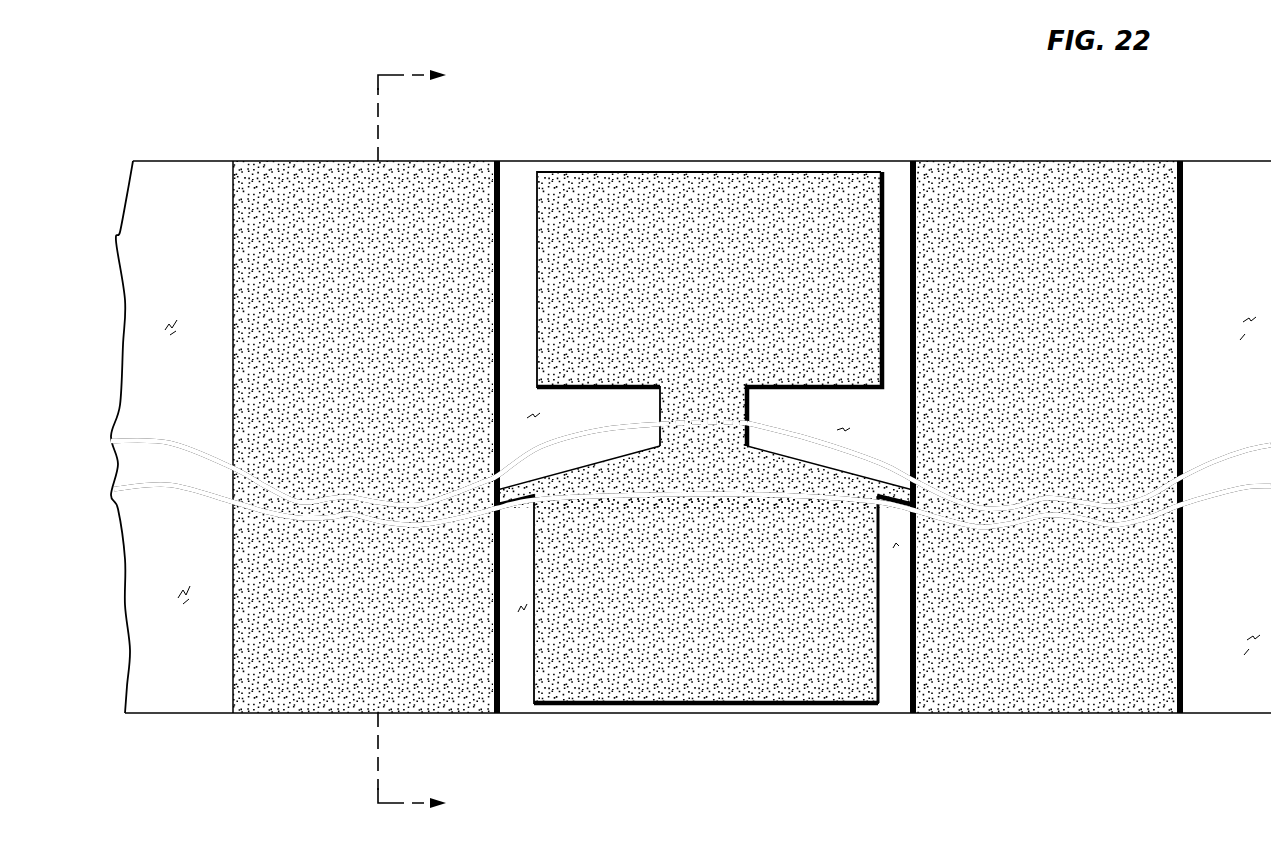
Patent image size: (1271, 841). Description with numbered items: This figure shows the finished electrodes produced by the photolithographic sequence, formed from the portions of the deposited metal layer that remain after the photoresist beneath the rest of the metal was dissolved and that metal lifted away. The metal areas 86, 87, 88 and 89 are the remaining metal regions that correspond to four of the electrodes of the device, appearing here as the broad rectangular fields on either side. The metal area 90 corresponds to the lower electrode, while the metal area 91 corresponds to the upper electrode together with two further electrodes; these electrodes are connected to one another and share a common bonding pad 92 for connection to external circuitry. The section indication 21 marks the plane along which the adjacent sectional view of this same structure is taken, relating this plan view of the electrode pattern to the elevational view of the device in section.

The section line of FIG. 21 is at (426, 440).
The metal area 86 is at (307, 703).
The metal area 87 is at (275, 169).
The metal area 88 is at (1045, 704).
The metal area 89 is at (1040, 166).
The metal area 90 is at (760, 700).
The metal area 91 is at (244, 490).
The common bonding pad 92 is at (730, 177).